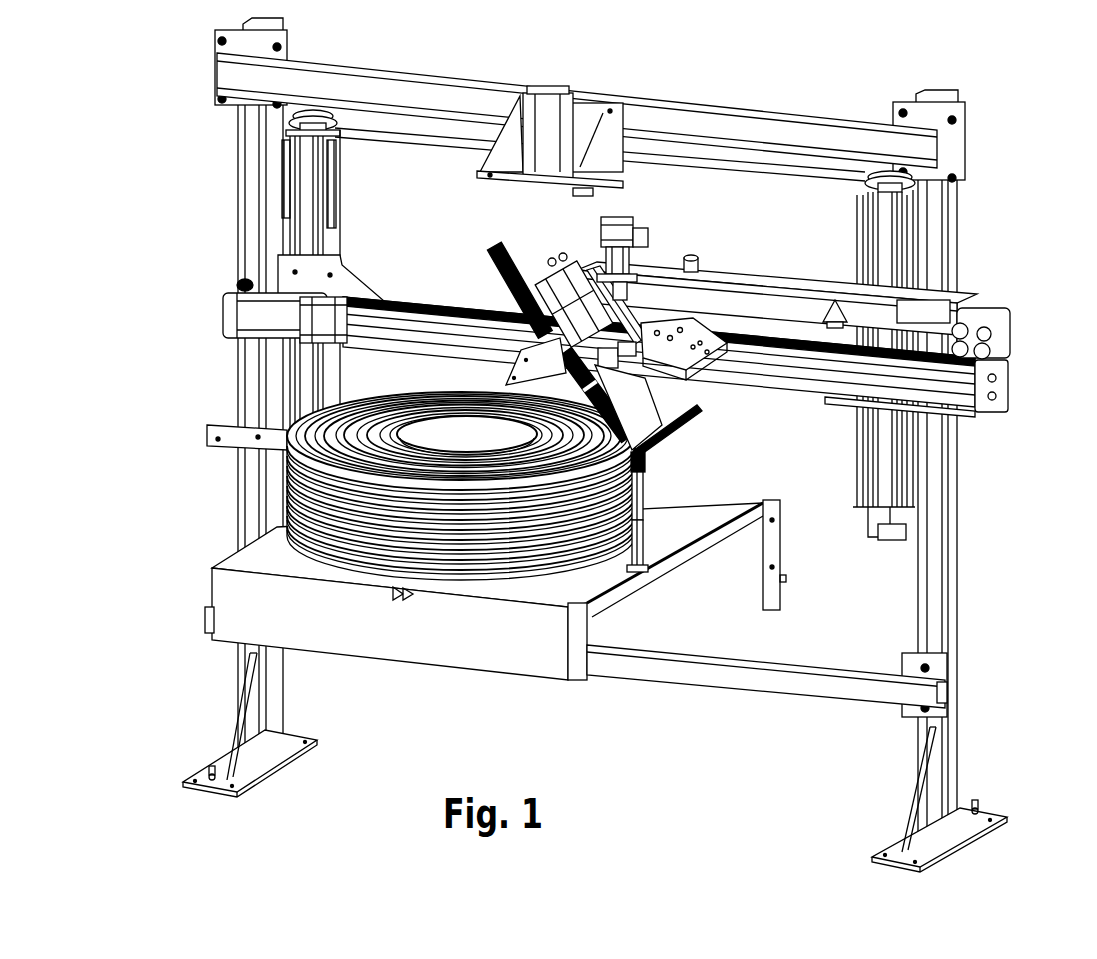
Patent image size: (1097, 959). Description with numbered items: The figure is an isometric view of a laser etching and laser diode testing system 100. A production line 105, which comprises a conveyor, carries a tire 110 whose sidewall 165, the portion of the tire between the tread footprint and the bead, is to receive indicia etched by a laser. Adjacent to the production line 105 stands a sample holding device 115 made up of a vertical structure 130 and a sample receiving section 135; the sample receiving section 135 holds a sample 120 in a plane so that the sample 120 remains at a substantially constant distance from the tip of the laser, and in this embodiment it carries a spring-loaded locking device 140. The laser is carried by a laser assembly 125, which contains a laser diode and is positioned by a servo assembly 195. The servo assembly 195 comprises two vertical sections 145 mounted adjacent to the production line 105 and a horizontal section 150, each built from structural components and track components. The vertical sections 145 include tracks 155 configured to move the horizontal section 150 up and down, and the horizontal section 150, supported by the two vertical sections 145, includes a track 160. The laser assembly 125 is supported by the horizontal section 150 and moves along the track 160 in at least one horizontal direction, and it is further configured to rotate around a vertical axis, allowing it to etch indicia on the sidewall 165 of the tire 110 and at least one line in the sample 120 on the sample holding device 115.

The laser etching and laser diode testing system 100 is at (556, 445).
The production line 105 is at (588, 637).
The tire 110 is at (285, 487).
The sample holding device 115 is at (645, 477).
The sample 120 is at (660, 412).
The laser assembly 125 is at (553, 262).
The vertical structure 130 is at (645, 528).
The sample receiving section 135 is at (693, 408).
The locking device 140 is at (642, 452).
The vertical section 145 is at (236, 374).
The horizontal section 150 is at (473, 73).
The tracks 155 is at (303, 197).
The track 160 is at (987, 393).
The sidewall 165 is at (352, 407).
The servo assembly 195 is at (240, 28).